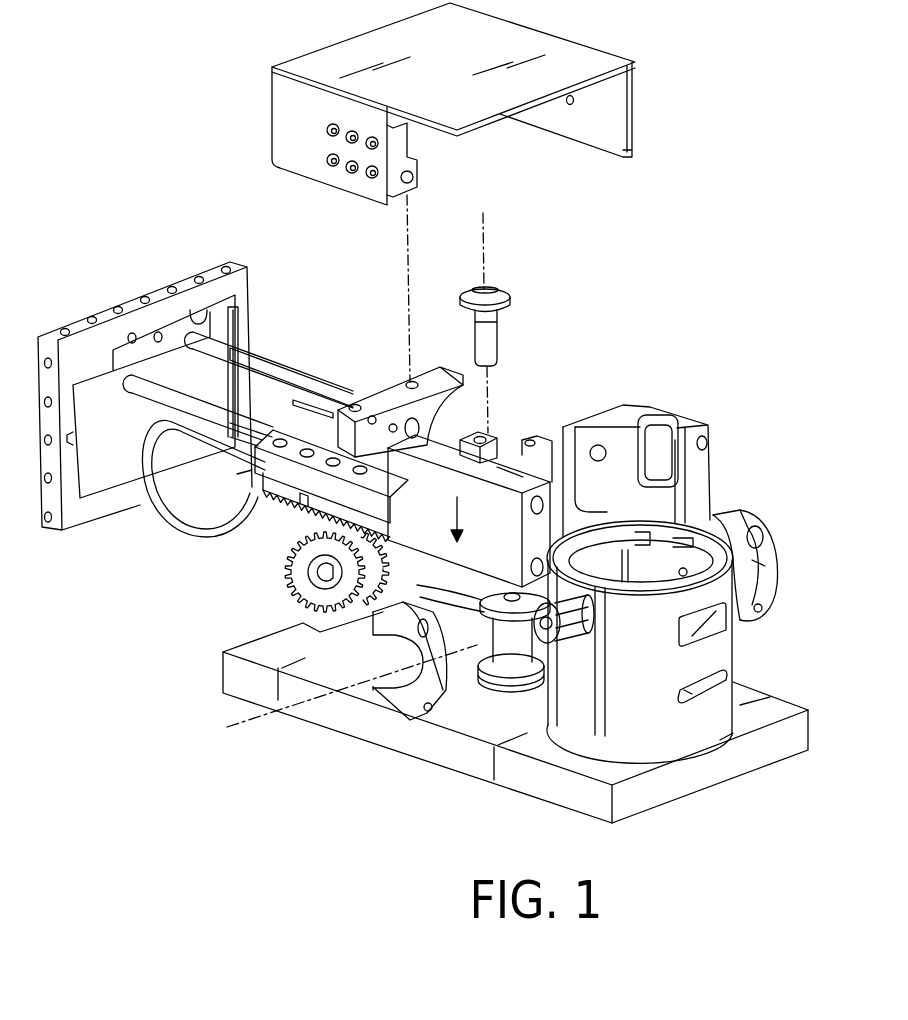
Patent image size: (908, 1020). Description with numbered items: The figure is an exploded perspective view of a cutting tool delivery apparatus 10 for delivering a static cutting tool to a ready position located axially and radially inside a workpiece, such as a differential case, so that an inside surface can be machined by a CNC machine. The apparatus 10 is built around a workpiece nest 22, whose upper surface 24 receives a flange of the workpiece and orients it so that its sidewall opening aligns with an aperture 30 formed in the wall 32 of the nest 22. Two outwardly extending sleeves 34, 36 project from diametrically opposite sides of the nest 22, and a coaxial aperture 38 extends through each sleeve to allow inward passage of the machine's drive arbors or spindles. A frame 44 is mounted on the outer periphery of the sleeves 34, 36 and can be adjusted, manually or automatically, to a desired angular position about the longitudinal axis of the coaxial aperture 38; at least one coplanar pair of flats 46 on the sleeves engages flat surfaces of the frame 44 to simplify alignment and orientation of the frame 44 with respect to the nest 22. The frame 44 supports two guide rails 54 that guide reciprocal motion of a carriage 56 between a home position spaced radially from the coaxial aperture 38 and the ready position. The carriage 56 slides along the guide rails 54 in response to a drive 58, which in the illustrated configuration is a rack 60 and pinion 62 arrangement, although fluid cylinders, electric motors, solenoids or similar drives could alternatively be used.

The cutting tool delivery apparatus 10 is at (452, 413).
The workpiece nest 22 is at (671, 631).
The upper surface 24 is at (765, 557).
The aperture 30 is at (613, 565).
The wall 32 is at (703, 730).
The outwardly extending sleeve 34 is at (568, 647).
The outwardly extending sleeve 36 is at (762, 566).
The coaxial aperture 38 is at (243, 720).
The frame 44 is at (583, 394).
The coplanar pair of flats 46 is at (482, 650).
The guide rail 54 is at (263, 347).
The carriage 56 is at (246, 474).
The drive 58 is at (470, 522).
The rack 60 is at (303, 503).
The pinion 62 is at (284, 568).